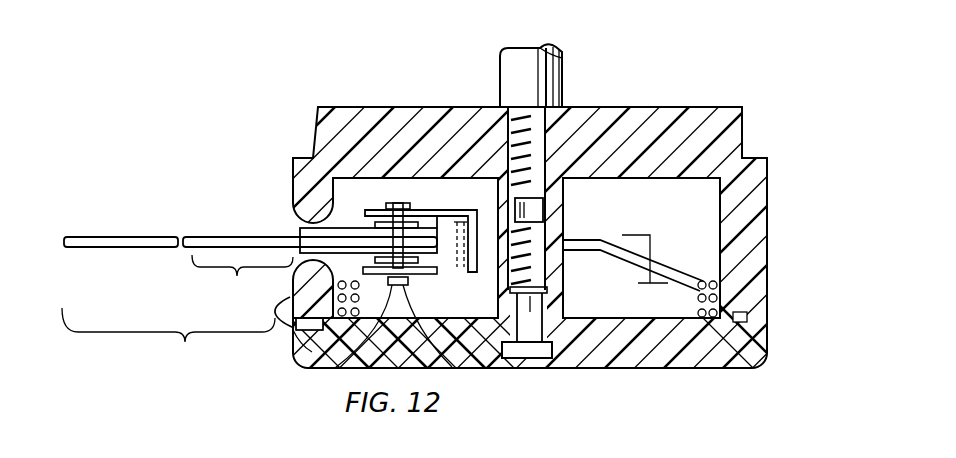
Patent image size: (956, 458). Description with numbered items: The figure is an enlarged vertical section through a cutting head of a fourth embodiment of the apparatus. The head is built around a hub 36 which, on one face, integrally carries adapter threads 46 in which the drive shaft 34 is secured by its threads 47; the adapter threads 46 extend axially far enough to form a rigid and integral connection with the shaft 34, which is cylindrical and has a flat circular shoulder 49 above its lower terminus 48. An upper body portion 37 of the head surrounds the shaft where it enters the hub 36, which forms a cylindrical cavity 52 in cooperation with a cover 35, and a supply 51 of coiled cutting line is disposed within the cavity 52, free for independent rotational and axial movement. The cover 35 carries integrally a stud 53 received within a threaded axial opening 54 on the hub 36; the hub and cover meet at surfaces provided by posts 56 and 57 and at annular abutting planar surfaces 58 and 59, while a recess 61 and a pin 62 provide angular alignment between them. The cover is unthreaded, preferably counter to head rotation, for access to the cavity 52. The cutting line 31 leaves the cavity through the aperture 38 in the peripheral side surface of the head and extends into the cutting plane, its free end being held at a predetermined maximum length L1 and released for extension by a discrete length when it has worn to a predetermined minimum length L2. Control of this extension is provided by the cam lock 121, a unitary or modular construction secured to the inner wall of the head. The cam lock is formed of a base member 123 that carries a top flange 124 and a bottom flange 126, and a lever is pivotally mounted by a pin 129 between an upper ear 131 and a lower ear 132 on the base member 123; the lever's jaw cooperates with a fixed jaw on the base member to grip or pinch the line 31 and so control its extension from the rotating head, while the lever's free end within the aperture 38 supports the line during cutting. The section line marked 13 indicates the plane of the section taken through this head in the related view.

The drive shaft 34 is at (523, 72).
The threads 47 is at (525, 112).
The lower terminus 48 is at (512, 153).
The flat circular shoulder 49 is at (552, 122).
The adapter threads 46 is at (580, 147).
The housing upper body 37 is at (735, 142).
The hub 36 is at (768, 196).
The cover 35 is at (770, 350).
The section line 13- 13 is at (292, 232).
The cutting line 31 is at (107, 242).
The aperture 38 is at (297, 260).
The top flange 124 is at (418, 178).
The upper ear 131 is at (372, 222).
The cam lock 121 is at (480, 189).
The base member 123 is at (452, 272).
The bottom flange 126 is at (394, 324).
The pin 129 is at (425, 368).
The lower ear 132 is at (345, 365).
The post 56 is at (565, 195).
The cylindrical cavity 52 is at (702, 212).
The threaded axial opening 54 is at (543, 240).
The post 57 is at (565, 284).
The supply of coiled cutting line 51 is at (698, 300).
The stud 53 is at (528, 352).
The annular abutting planar surface 58 is at (705, 372).
The recess 61 is at (748, 324).
The annular abutting planar surface 59 is at (273, 322).
The pin 62 is at (300, 360).
The predetermined maximum length L1 is at (168, 341).
The predetermined minimum length L2 is at (242, 282).